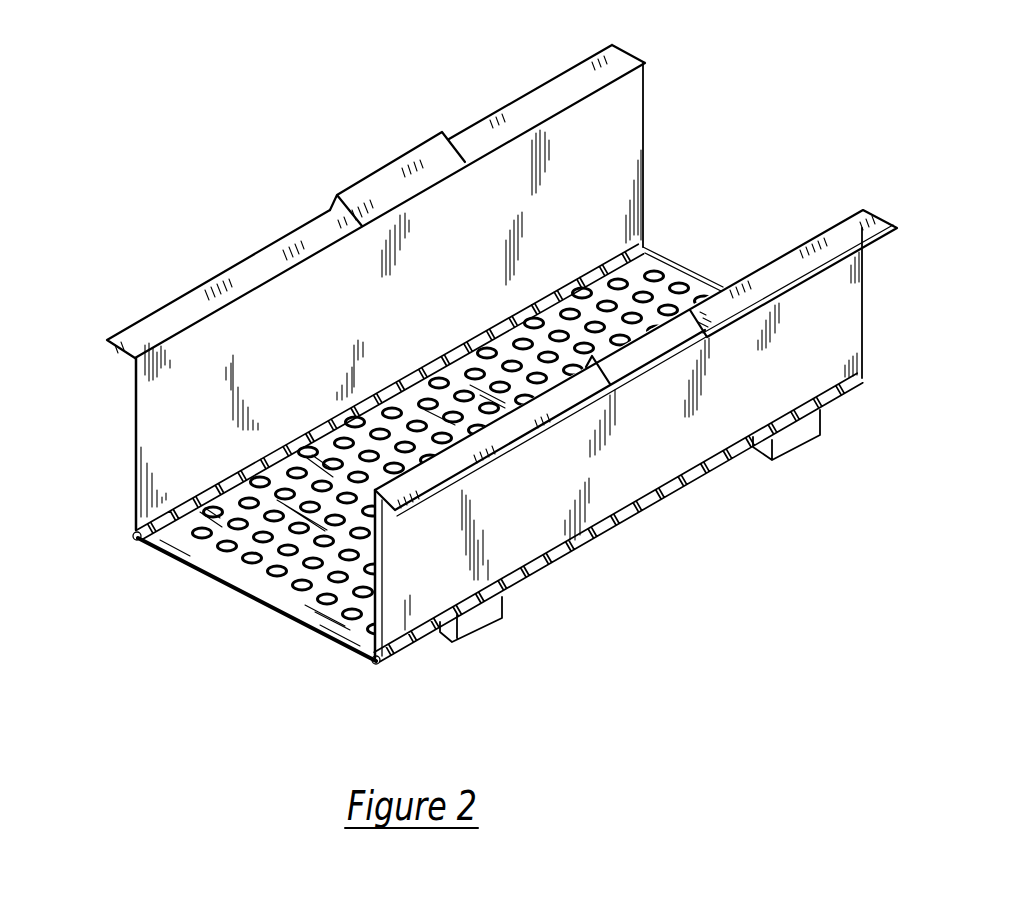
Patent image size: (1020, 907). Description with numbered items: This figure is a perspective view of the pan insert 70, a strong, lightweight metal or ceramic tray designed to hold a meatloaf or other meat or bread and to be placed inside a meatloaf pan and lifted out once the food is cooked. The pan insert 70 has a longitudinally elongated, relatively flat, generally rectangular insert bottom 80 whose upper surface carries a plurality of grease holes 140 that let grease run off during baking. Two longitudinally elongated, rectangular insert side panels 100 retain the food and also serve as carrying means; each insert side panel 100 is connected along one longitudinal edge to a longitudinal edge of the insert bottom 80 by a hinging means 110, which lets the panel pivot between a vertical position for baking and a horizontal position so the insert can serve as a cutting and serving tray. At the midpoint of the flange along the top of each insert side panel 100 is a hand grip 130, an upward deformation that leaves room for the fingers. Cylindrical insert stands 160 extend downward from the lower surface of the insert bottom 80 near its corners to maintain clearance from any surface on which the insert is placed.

The pan insert 70 is at (130, 467).
The insert bottom 80 is at (697, 287).
The insert side panel 100 is at (422, 597).
The hinging means 110 is at (618, 250).
The hand grip 130 is at (402, 153).
The grease holes 140 is at (252, 557).
The insert stand 160 is at (492, 625).